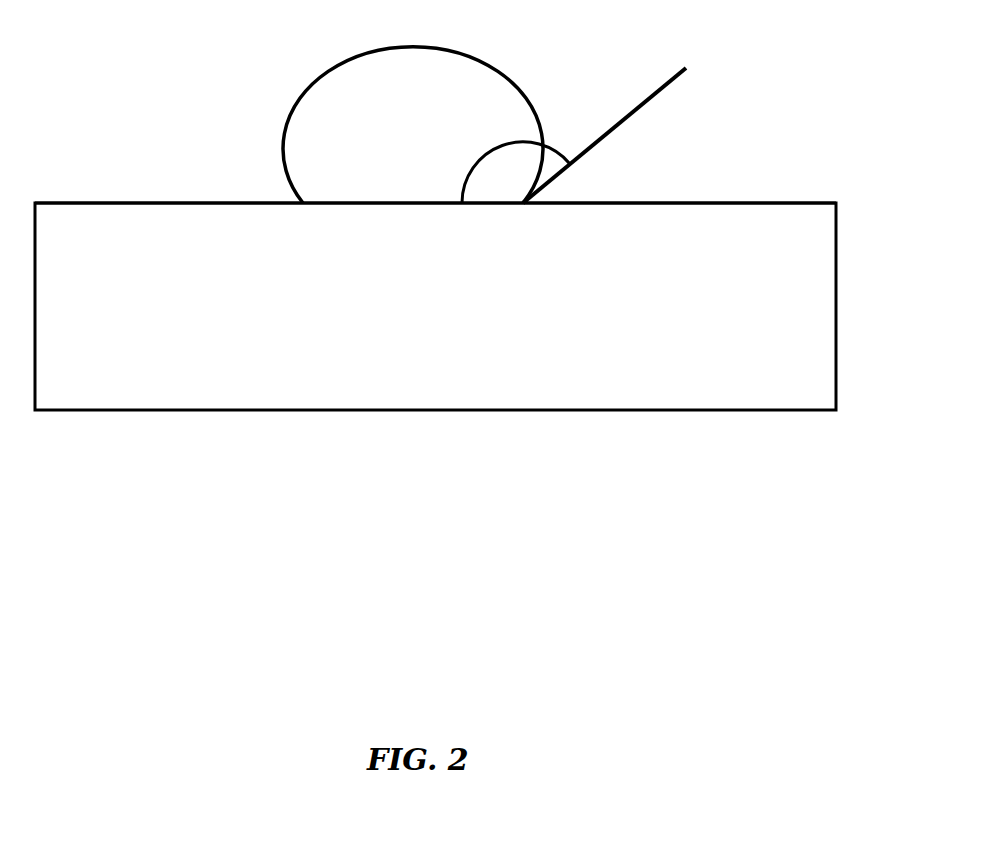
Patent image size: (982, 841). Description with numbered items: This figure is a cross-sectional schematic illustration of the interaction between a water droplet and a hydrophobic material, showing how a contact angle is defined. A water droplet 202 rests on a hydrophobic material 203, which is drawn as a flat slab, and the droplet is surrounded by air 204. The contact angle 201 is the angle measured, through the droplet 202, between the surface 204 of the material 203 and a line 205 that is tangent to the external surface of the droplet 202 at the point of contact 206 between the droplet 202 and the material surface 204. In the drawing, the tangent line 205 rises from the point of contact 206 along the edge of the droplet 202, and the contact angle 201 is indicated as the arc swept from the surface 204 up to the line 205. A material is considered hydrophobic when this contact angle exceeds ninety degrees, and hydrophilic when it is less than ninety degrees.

The contact angle 201 is at (516, 162).
The water droplet 202 is at (425, 140).
The hydrophobic material 203 is at (426, 318).
The surface 204 is at (203, 38).
The tangent line 205 is at (658, 90).
The point of contact 206 is at (524, 206).